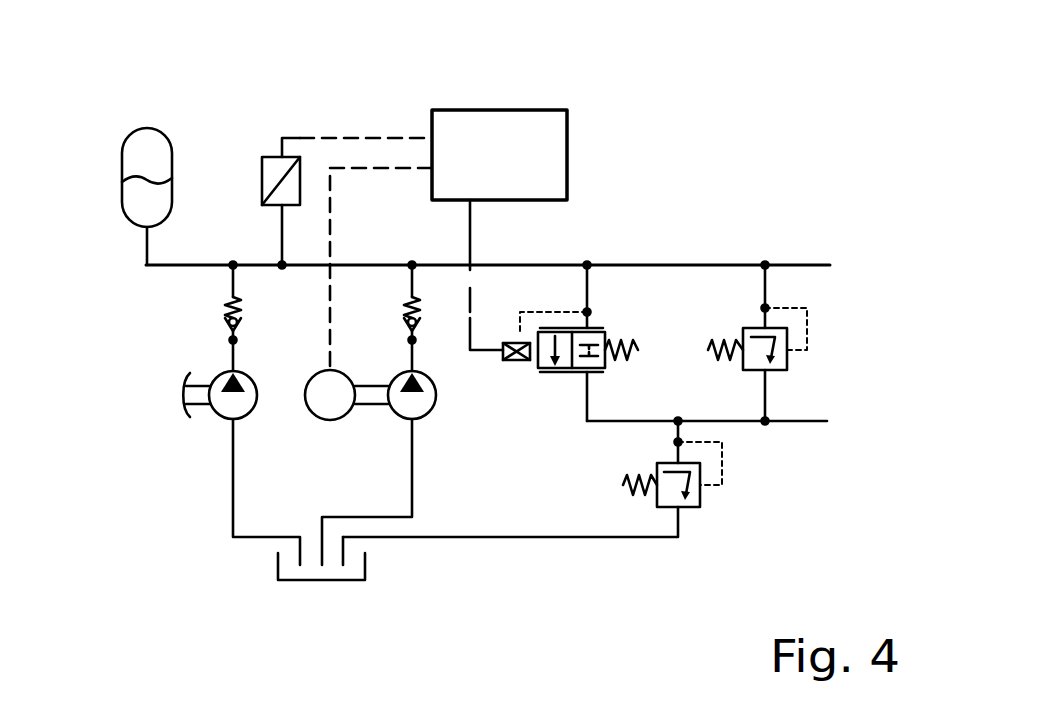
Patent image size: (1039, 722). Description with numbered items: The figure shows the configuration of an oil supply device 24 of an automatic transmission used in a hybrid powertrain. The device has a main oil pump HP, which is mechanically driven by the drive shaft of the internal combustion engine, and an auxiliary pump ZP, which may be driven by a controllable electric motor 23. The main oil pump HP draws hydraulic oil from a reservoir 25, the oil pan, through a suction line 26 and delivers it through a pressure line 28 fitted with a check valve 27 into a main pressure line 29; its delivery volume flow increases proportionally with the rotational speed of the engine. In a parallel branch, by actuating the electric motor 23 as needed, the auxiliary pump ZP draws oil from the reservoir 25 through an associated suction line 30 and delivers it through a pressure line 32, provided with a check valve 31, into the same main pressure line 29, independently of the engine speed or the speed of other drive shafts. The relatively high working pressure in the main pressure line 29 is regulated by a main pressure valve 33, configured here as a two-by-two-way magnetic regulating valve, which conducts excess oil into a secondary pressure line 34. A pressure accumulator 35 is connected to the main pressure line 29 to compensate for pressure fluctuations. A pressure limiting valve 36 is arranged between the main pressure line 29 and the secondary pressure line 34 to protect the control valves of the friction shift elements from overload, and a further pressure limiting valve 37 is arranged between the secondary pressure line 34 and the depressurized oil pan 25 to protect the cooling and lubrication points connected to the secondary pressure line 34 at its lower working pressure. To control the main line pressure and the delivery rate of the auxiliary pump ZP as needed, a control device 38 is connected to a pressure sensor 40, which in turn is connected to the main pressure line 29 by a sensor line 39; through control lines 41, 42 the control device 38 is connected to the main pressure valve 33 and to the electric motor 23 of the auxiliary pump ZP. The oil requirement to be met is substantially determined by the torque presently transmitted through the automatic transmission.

The electric motor 23 is at (322, 419).
The oil supply device 24 is at (637, 157).
The reservoir 25 is at (332, 566).
The suction line 26 is at (253, 540).
The check valve 27 is at (208, 318).
The pressure line 28 is at (233, 363).
The main pressure line 29 is at (769, 262).
The suction line 30 is at (378, 519).
The check valve 31 is at (395, 312).
The pressure line 32 is at (413, 355).
The main pressure valve 33 is at (563, 390).
The secondary pressure line 34 is at (793, 423).
The pressure accumulator 35 is at (142, 150).
The pressure limiting valve 36 is at (808, 358).
The pressure limiting valve 37 is at (695, 525).
The control device 38 is at (492, 137).
The sensor line 39 is at (317, 138).
The pressure sensor 40 is at (263, 185).
The control line 41 is at (485, 352).
The control line 42 is at (367, 168).
The main oil pump HP is at (216, 412).
The auxiliary pump ZP is at (393, 413).